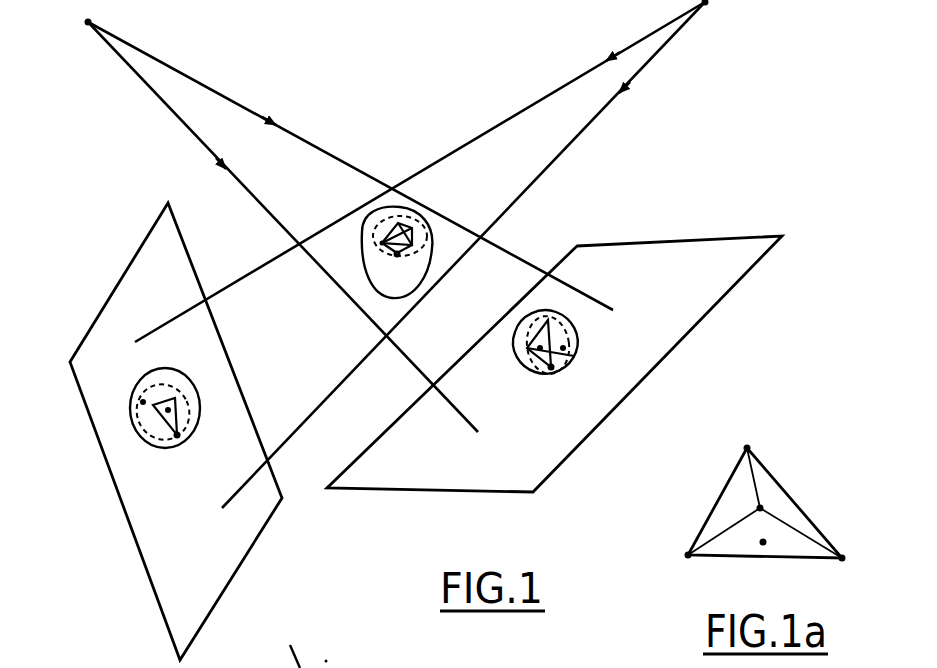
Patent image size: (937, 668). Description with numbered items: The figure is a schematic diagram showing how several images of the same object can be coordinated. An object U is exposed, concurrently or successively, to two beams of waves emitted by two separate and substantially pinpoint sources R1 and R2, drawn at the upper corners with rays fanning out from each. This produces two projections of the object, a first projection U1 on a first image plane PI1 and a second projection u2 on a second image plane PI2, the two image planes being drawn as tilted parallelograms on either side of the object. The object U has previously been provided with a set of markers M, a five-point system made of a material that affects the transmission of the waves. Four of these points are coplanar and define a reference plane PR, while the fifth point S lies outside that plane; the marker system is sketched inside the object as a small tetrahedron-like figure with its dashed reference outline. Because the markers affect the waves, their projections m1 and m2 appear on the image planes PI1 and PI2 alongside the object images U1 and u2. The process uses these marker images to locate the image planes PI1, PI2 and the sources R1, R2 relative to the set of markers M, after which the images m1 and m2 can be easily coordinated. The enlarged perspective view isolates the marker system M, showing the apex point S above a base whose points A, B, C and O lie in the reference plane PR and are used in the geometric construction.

In FIG. 1, the first pinpoint wave source R1 is at (88, 24).
In FIG. 1, the second pinpoint wave source R2 is at (708, 4).
In FIG. 1, the first image plane PI1 is at (760, 273).
In FIG. 1, the second image plane PI2 is at (121, 518).
In FIG. 1, the reference plane PR is at (446, 219).
In FIG. 1, the object U is at (429, 206).
In FIG. 1, the outside point S is at (383, 232).
In FIG. 1A, the outside point S is at (749, 449).
In FIG. 1, the set of markers M is at (397, 257).
In FIG. 1A, the set of markers M is at (816, 506).
In FIG. 1, the first projection of the object U1 is at (584, 333).
In FIG. 1, the first projection of the markers m1 is at (544, 380).
In FIG. 1, the second projection of the object u2 is at (148, 448).
In FIG. 1, the second projection of the markers m2 is at (176, 442).
In FIG. 1A, the reference plane point A is at (675, 564).
In FIG. 1A, the reference plane point B is at (765, 503).
In FIG. 1A, the reference plane point C is at (846, 576).
In FIG. 1A, the reference plane point O is at (753, 541).